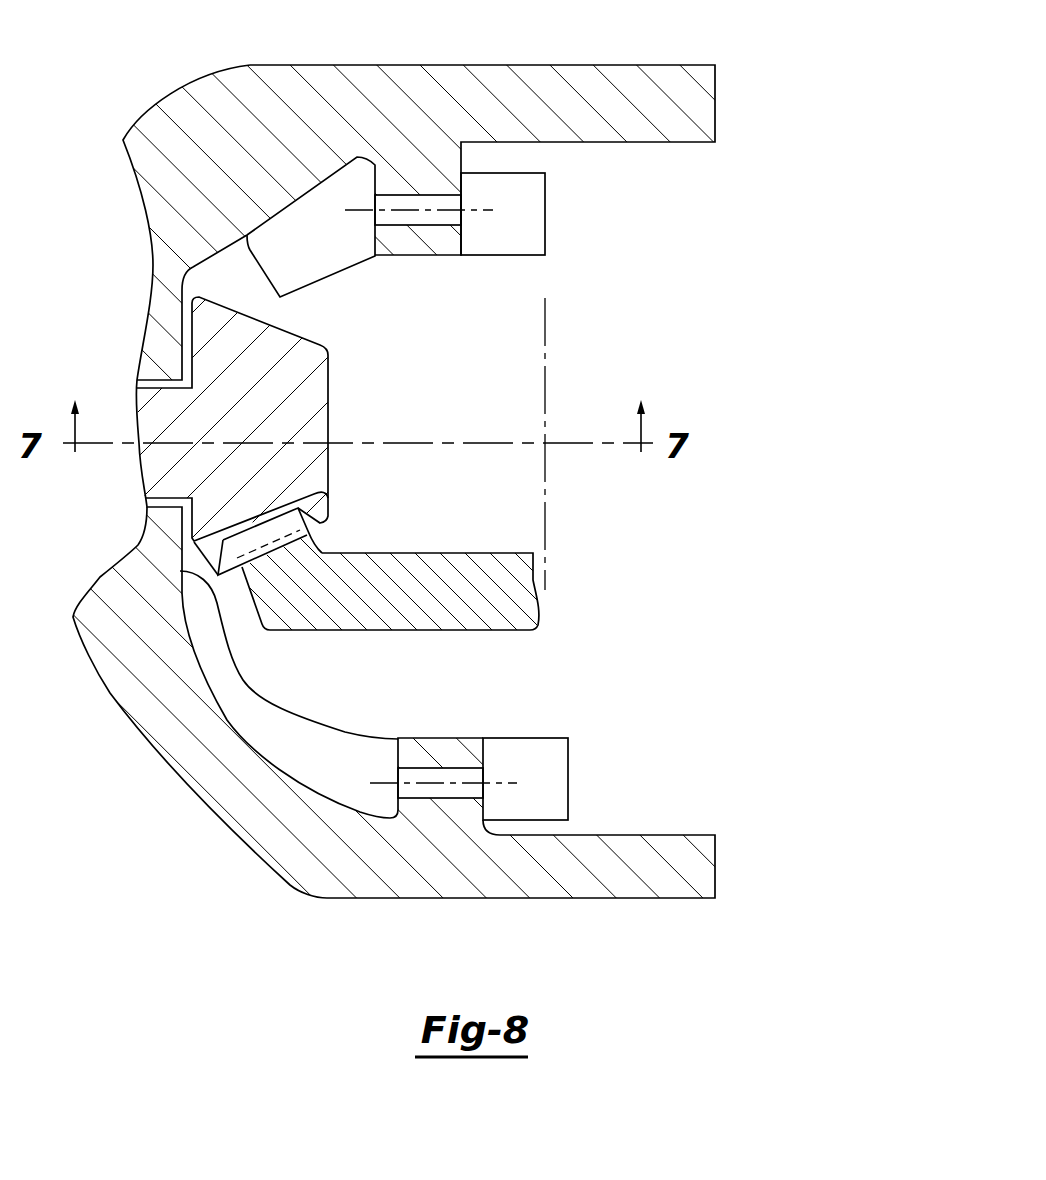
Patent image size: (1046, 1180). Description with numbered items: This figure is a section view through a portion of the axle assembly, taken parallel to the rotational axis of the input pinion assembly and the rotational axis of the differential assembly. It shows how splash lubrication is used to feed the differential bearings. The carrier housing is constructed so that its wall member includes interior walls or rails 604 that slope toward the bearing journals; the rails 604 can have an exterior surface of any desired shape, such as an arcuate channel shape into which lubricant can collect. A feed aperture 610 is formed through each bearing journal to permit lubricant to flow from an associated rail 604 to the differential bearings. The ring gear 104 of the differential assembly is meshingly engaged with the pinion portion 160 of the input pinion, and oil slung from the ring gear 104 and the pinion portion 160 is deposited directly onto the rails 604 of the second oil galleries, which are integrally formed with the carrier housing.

The rails 604 is at (305, 268).
The feed aperture 610 is at (443, 212).
The pinion portion 160 is at (310, 400).
The ring gear 104 is at (475, 623).